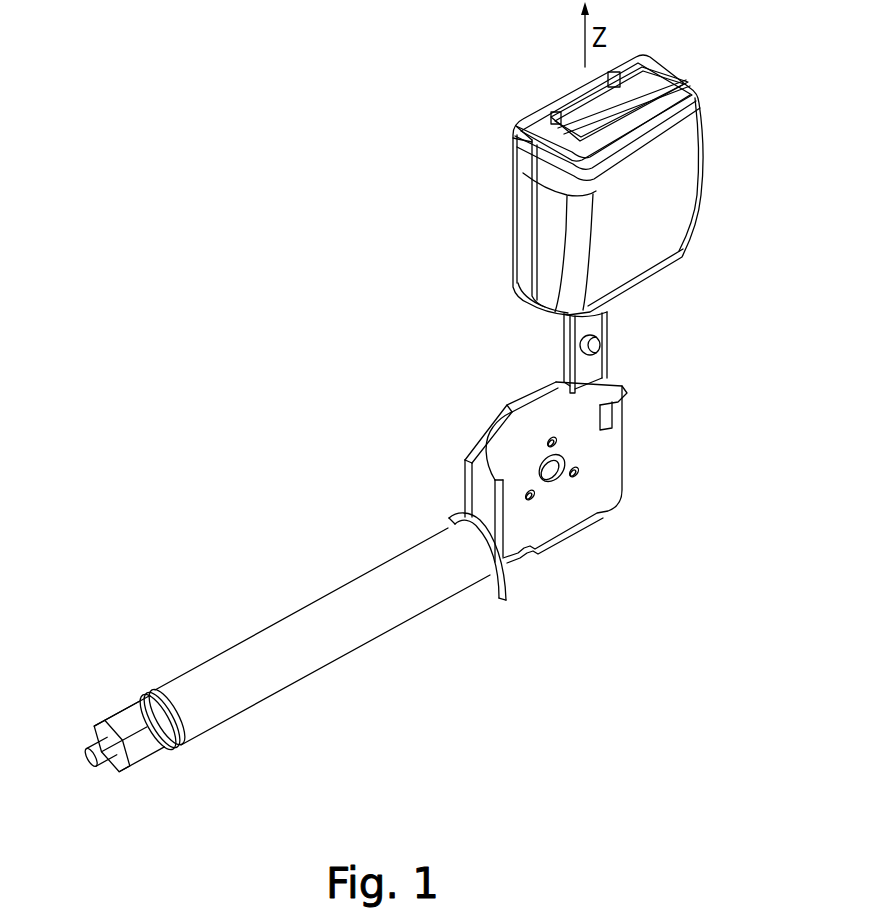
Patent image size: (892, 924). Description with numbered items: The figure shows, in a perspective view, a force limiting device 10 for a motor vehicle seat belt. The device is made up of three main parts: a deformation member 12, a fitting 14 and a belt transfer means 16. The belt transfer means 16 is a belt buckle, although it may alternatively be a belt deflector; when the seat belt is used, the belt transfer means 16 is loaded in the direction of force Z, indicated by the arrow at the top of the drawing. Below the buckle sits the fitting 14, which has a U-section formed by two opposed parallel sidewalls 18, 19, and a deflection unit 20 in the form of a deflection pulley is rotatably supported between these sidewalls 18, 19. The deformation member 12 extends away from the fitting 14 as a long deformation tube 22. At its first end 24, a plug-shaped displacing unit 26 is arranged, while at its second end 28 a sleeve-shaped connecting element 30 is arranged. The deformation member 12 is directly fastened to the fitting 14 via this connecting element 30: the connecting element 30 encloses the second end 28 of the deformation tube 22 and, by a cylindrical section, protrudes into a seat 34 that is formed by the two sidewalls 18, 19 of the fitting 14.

The force limiting device 10 is at (333, 203).
The deformation member 12 is at (279, 608).
The fitting 14 is at (643, 476).
The belt transfer means 16 is at (704, 232).
The sidewall 18 is at (548, 517).
The sidewall 19 is at (467, 455).
The deflection unit 20 is at (517, 430).
The deformation tube 22 is at (362, 631).
The first end 24 is at (197, 741).
The displacing unit 26 is at (133, 745).
The second end 28 is at (480, 567).
The connecting element 30 is at (508, 564).
The seat 34 is at (476, 498).